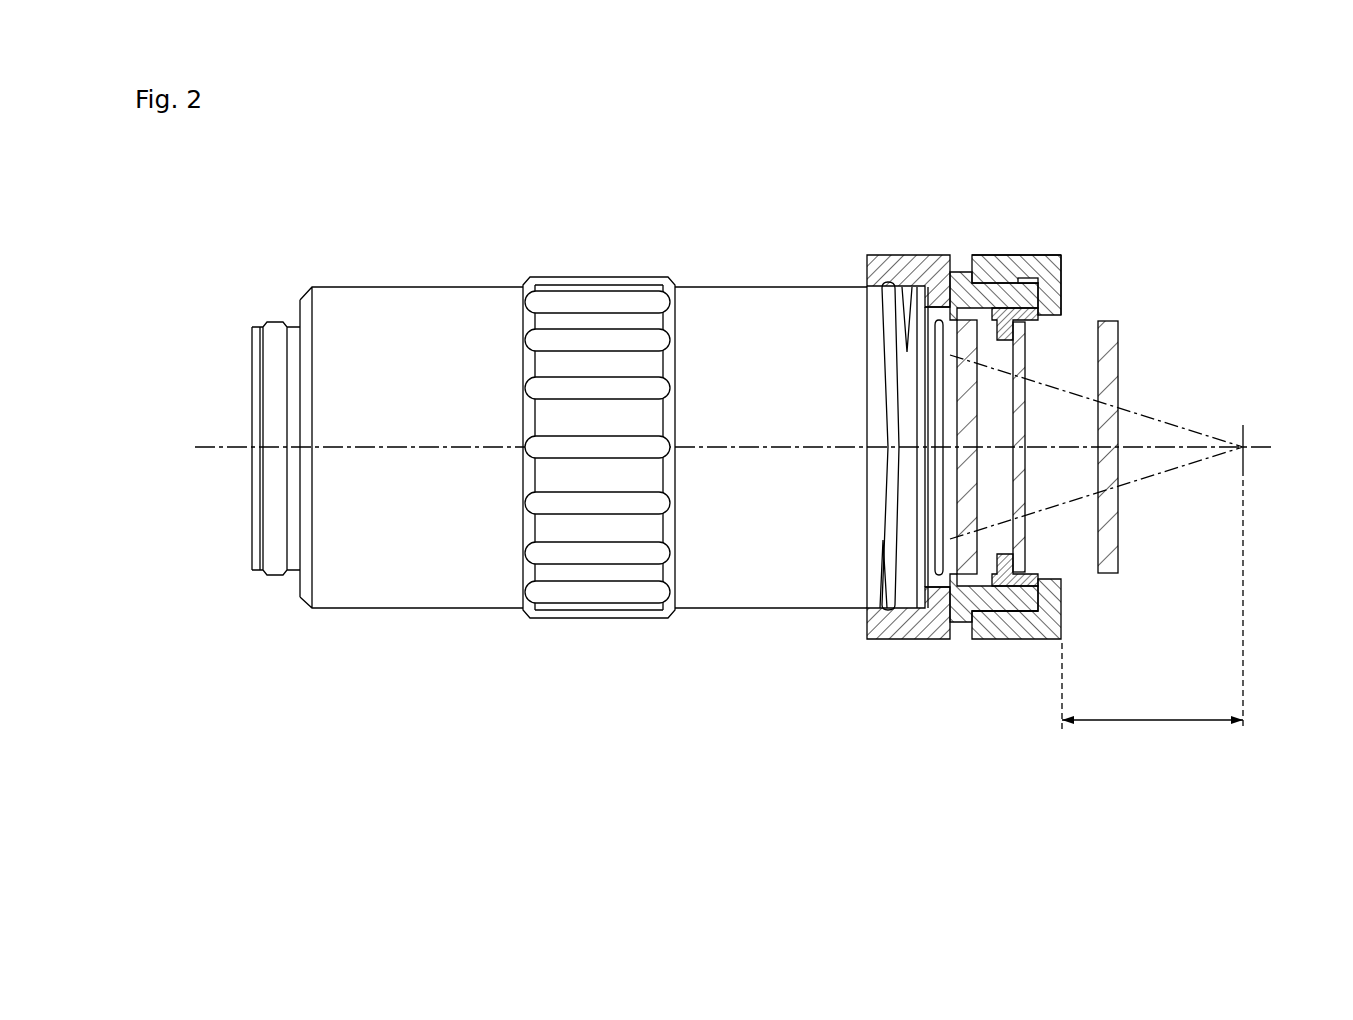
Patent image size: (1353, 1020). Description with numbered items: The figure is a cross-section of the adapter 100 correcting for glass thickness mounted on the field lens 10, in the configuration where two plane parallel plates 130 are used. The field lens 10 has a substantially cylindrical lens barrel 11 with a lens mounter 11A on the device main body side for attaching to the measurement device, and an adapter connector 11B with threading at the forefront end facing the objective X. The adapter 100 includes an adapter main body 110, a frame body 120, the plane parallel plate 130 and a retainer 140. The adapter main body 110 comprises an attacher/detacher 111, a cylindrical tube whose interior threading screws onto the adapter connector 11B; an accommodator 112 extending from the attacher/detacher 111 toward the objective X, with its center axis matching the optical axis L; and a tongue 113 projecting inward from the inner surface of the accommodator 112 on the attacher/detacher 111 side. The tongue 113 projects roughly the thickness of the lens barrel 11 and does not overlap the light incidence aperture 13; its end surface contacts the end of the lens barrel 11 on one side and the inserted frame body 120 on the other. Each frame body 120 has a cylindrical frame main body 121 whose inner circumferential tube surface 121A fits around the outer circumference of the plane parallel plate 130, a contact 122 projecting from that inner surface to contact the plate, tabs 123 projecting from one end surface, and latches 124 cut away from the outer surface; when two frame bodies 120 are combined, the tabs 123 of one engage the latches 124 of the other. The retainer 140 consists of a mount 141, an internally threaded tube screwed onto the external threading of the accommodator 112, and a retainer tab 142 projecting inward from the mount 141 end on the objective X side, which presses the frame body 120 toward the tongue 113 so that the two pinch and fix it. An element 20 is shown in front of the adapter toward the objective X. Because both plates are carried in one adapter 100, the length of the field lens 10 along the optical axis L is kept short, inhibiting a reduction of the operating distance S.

The field lens 10 is at (452, 284).
The lens barrel 11 is at (725, 287).
The lens mounter 11A is at (266, 322).
The adapter connector 11B is at (880, 315).
The tongue 113 is at (933, 305).
The light incidence aperture 13 is at (958, 490).
The adapter correcting for glass thickness 100 is at (962, 242).
The adapter main body 110 is at (932, 255).
The attacher/detacher 111 is at (878, 255).
The accommodator 112 is at (988, 256).
The frame body 120 is at (962, 612).
The frame main body 121 is at (1045, 575).
The inner circumferential tube surface 121A is at (1038, 578).
The contact 122 is at (1015, 332).
The tabs 123 is at (1010, 256).
The latches 124 is at (1040, 290).
The plane parallel plate 130 is at (960, 405).
The retainer 140 is at (1057, 255).
The mount 141 is at (1013, 612).
The retainer tab 142 is at (1062, 283).
The optical element 20 is at (1119, 338).
The objective X is at (1244, 447).
The optical axis L is at (747, 450).
The operating distance S is at (1152, 610).